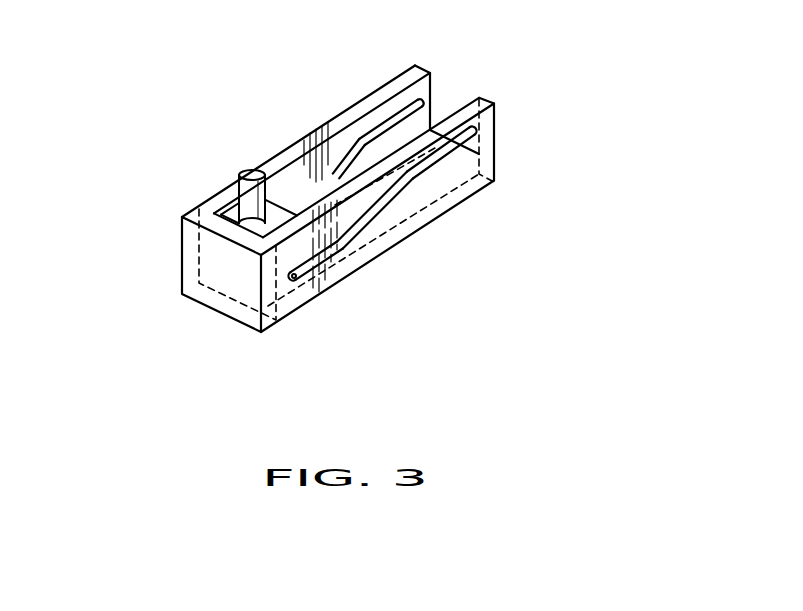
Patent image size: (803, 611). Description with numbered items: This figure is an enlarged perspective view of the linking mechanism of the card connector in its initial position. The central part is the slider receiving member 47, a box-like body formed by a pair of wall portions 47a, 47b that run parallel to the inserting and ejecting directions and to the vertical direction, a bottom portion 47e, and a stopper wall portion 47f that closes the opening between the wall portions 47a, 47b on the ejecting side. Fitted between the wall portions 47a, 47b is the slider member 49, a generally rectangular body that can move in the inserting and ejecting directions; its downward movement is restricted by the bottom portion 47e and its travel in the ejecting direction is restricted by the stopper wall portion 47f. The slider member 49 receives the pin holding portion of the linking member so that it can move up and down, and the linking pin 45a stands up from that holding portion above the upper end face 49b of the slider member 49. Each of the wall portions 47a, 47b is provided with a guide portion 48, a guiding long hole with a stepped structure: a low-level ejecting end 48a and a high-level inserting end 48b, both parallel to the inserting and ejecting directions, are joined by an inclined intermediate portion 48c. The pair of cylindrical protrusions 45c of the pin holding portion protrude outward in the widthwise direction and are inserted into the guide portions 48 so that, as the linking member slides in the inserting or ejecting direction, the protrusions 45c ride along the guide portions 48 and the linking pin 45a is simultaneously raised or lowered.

The slider receiving member 47 is at (418, 233).
The wall portion 47a is at (425, 93).
The wall portion 47b is at (490, 164).
The bottom portion 47e is at (494, 189).
The stopper wall portion 47f is at (220, 287).
The guide portion 48 is at (404, 183).
The ejecting end 48a is at (323, 258).
The inserting end 48b is at (450, 153).
The inclined intermediate portion 48c is at (362, 148).
The slider member 49 is at (277, 197).
The upper end face 49b is at (225, 222).
The linking pin 45a is at (248, 174).
The cylindrical protrusions 45c is at (299, 285).